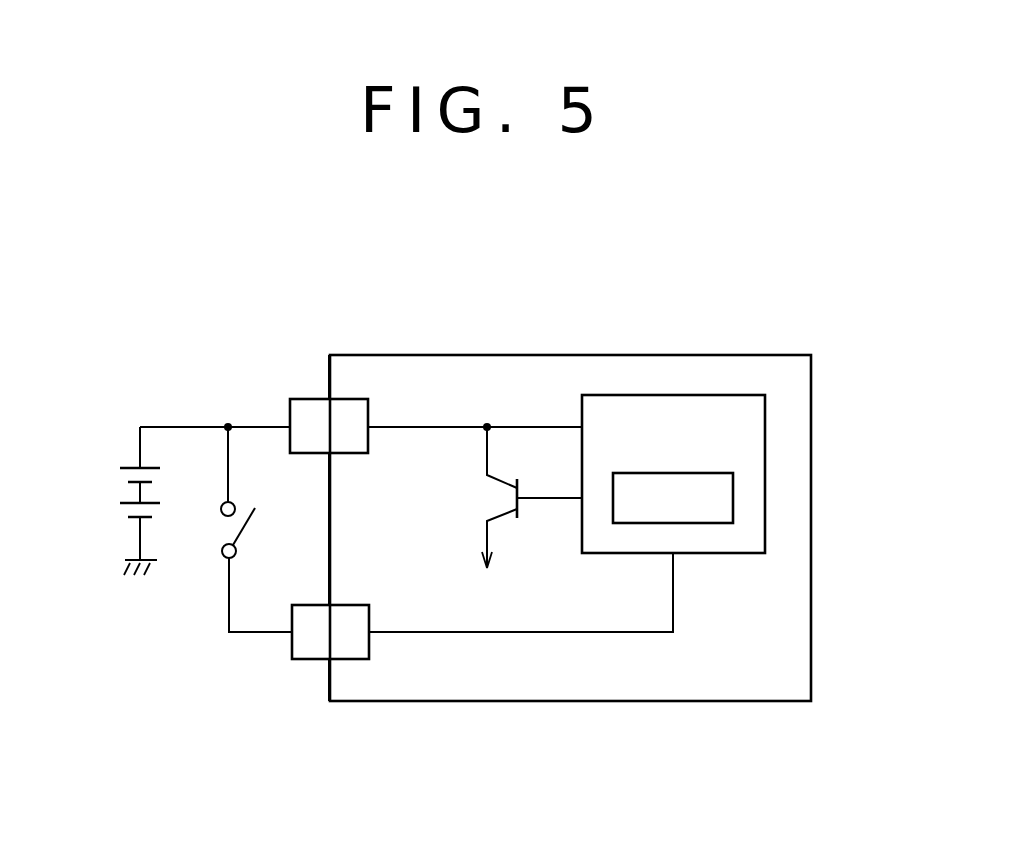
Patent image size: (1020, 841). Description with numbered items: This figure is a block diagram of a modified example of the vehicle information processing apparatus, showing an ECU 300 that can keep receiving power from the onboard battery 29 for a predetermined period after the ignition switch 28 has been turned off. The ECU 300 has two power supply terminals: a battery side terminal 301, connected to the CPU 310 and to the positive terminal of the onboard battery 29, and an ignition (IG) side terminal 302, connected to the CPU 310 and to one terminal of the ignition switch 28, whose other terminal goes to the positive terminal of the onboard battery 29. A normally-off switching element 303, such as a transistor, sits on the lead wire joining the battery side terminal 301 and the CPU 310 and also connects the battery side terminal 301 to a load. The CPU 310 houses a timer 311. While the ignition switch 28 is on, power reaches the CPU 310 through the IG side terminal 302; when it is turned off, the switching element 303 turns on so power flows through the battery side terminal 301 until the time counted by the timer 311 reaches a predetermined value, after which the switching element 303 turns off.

The ECU 300 is at (570, 353).
The battery side terminal 301 is at (312, 399).
The ignition (IG) side terminal 302 is at (315, 659).
The switching element 303 is at (486, 499).
The CPU 310 is at (765, 427).
The timer 311 is at (733, 498).
The ignition switch 28 is at (218, 537).
The onboard battery 29 is at (118, 492).